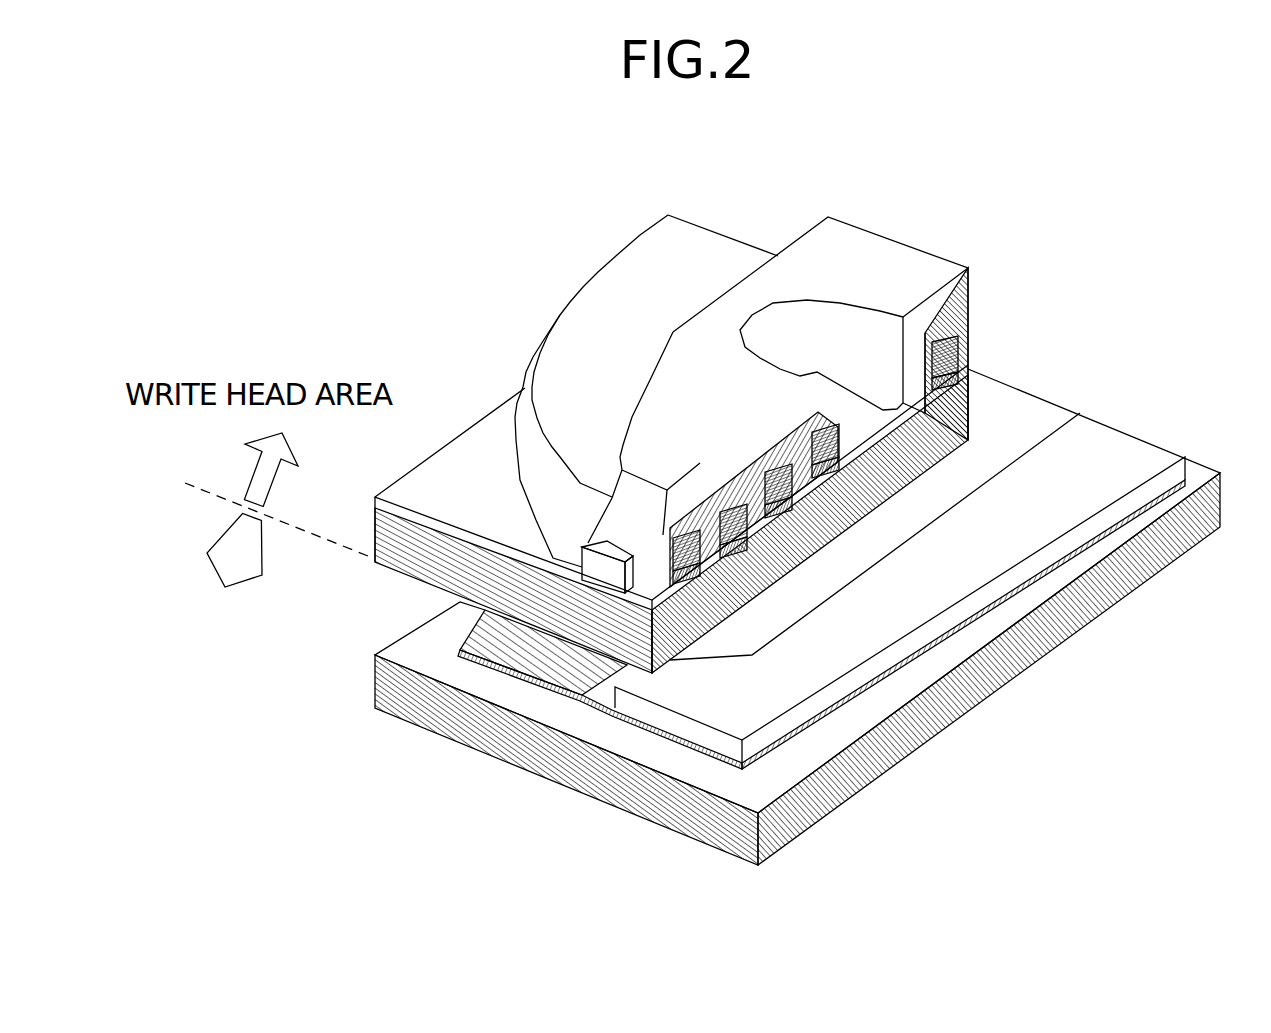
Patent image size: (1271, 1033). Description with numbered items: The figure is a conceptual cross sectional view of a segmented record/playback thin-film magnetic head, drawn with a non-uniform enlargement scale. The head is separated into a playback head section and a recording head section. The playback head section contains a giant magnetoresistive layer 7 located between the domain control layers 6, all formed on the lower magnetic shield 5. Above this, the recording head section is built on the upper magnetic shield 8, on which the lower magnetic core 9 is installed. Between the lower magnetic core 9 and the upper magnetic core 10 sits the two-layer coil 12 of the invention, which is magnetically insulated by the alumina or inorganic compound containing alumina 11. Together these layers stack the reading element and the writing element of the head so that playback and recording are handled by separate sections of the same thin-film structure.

The lower magnetic shield 5 is at (906, 755).
The domain control layers 6 is at (685, 727).
The giant magnetoresistive layer 7 is at (580, 705).
The upper magnetic shield 8 is at (376, 514).
The lower magnetic core 9 is at (767, 532).
The upper magnetic core 10 is at (910, 292).
The alumina or inorganic compound containing alumina 11 is at (807, 428).
The two-layer coil 12 is at (880, 427).